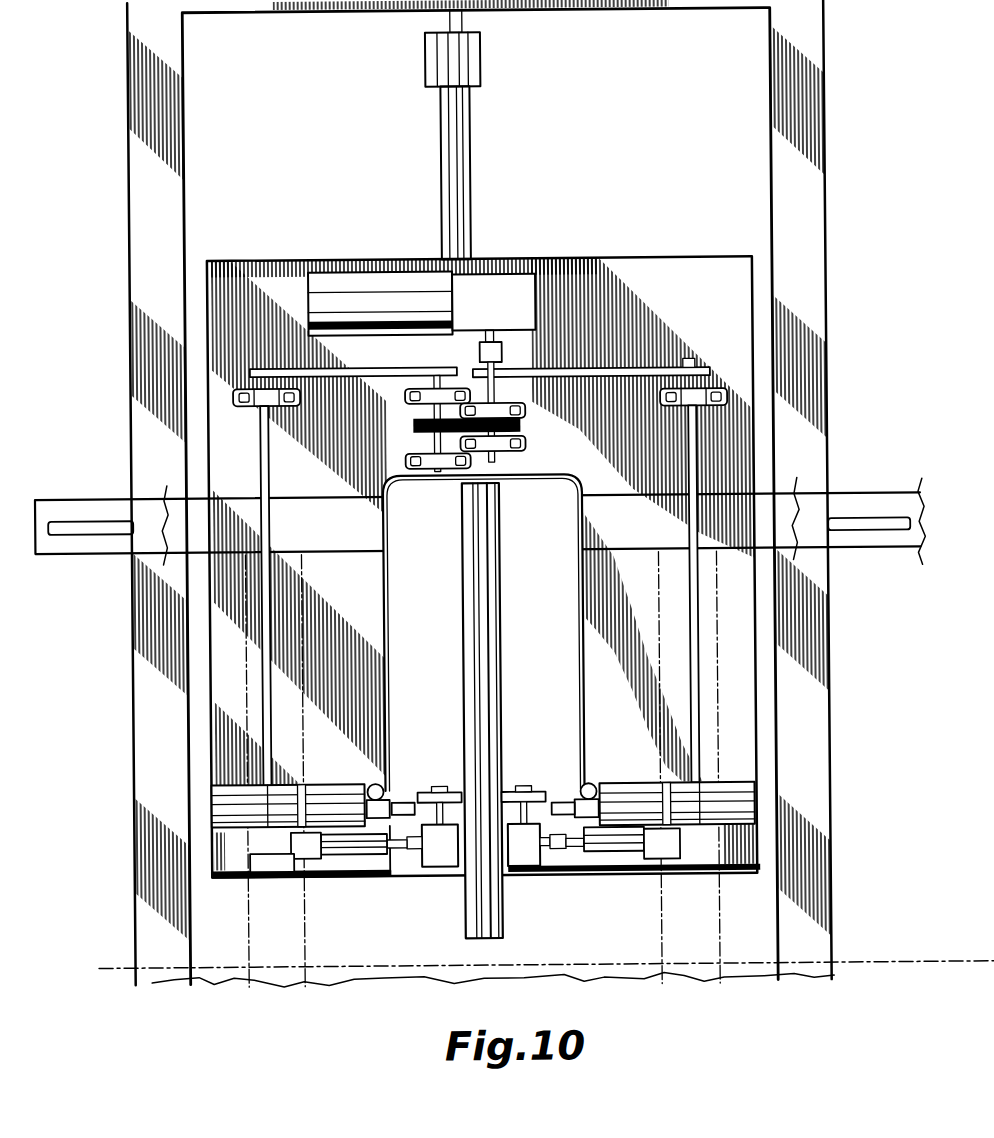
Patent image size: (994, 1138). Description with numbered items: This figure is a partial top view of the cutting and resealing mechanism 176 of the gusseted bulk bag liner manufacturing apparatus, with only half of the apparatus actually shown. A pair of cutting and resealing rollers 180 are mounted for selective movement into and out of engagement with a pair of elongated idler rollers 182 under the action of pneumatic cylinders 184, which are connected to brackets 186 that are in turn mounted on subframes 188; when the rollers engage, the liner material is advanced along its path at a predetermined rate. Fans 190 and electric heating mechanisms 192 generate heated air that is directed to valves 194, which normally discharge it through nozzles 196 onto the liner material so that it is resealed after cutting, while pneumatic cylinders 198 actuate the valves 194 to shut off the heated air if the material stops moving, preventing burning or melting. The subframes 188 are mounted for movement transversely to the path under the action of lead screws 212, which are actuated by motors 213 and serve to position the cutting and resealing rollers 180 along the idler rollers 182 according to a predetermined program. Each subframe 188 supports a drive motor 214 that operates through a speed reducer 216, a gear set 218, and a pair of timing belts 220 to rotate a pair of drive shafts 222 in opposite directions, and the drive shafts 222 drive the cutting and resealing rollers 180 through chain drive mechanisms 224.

The mechanism 176 is at (85, 96).
The cutting and resealing rollers 180 is at (463, 790).
The elongated idler rollers 182 is at (463, 620).
The pneumatic cylinders 184 is at (355, 870).
The brackets 186 is at (290, 878).
The subframes 188 is at (648, 266).
The fans 190 is at (212, 790).
The electric heating mechanisms 192 is at (300, 788).
The valves 194 is at (380, 799).
The nozzles 196 is at (433, 791).
The pneumatic cylinders 198 is at (372, 783).
The lead screws 212 is at (444, 158).
The motors 213 is at (429, 60).
The drive motor 214 is at (368, 290).
The speed reducer 216 is at (498, 288).
The gear set 218 is at (536, 425).
The timing belts 220 is at (356, 370).
The drive shafts 222 is at (270, 512).
The chain drive mechanisms 224 is at (240, 886).